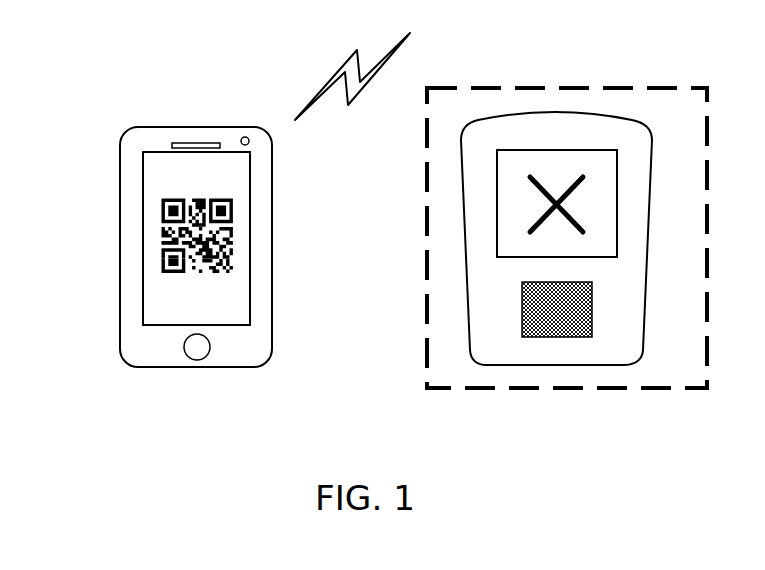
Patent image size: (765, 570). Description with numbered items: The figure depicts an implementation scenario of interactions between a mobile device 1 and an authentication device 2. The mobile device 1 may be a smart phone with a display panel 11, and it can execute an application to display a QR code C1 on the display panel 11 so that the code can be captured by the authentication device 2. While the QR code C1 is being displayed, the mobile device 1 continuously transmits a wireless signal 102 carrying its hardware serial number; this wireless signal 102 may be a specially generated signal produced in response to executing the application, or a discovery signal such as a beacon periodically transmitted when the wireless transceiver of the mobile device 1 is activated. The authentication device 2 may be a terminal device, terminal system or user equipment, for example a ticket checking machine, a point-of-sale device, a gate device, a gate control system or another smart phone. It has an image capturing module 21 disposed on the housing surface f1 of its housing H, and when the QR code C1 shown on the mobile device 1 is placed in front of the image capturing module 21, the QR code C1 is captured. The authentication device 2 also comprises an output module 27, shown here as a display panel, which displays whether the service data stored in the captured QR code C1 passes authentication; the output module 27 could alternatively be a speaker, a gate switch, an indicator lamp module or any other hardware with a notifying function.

The mobile device 1 is at (151, 78).
The display panel 11 is at (143, 295).
The QR code C1 is at (232, 257).
The wireless signal 102 is at (343, 67).
The authentication device 2 is at (584, 78).
The housing H is at (638, 360).
The output module 27 is at (618, 228).
The housing surface f1 is at (603, 142).
The image capturing module 21 is at (592, 325).